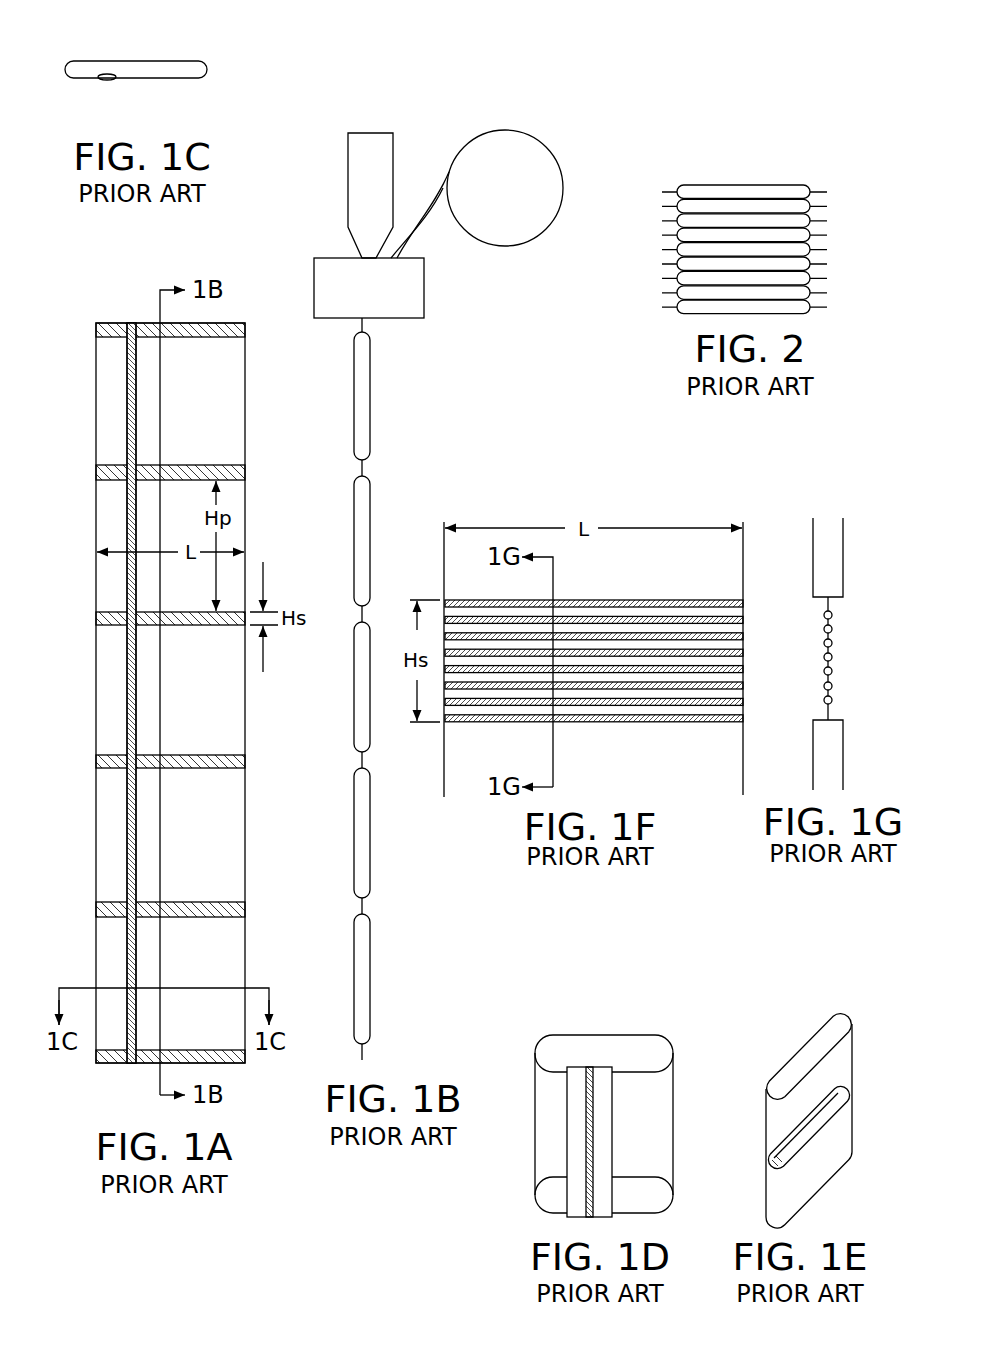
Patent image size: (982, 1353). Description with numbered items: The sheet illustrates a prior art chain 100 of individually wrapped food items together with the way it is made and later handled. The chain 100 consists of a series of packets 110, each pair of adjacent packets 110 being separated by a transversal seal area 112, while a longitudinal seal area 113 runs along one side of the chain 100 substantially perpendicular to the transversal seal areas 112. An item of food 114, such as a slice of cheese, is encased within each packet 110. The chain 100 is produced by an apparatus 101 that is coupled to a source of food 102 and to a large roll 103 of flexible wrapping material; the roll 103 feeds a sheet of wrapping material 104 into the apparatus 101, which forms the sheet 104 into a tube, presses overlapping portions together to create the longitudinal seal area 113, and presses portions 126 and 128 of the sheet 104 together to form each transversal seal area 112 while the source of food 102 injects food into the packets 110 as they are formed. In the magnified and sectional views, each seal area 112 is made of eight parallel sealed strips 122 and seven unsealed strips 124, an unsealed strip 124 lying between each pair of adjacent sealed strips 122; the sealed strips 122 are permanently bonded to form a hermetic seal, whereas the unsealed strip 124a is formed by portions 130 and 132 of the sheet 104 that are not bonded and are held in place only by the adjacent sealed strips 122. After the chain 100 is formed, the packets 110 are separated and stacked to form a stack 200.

In FIG. 1A, the chain 100 is at (108, 1080).
In FIG. 1B, the chain 100 is at (396, 1005).
In FIG. 1B, the apparatus 101 is at (425, 296).
In FIG. 1B, the source of food 102 is at (393, 152).
In FIG. 1B, the roll 103 is at (548, 147).
In FIG. 1B, the sheet of wrapping material 104 is at (418, 218).
In FIG. 1D, the sheet of wrapping material 104 is at (577, 1036).
In FIG. 1E, the sheet of wrapping material 104 is at (820, 1028).
In FIG. 1A, the packet 110 is at (96, 387).
In FIG. 1B, the packet 110 is at (372, 405).
In FIG. 1C, the packet 110 is at (165, 82).
In FIG. 1F, the packet 110 is at (444, 531).
In FIG. 1G, the packet 110 is at (843, 548).
In FIG. 2, the packet 110 is at (770, 183).
In FIG. 1A, the transversal seal area 112 is at (96, 331).
In FIG. 1B, the transversal seal area 112 is at (365, 325).
In FIG. 1F, the transversal seal area 112 is at (510, 596).
In FIG. 2, the transversal seal area 112 is at (672, 190).
In FIG. 1A, the longitudinal seal area 113 is at (127, 575).
In FIG. 1C, the longitudinal seal area 113 is at (108, 82).
In FIG. 1D, the longitudinal seal area 113 is at (595, 1125).
In FIG. 1B, the item of food 114 is at (366, 457).
In FIG. 1C, the item of food 114 is at (155, 68).
In FIG. 2, the item of food 114 is at (698, 190).
In FIG. 1F, the sealed strip 122 is at (592, 600).
In FIG. 1G, the sealed strip 122 is at (832, 660).
In FIG. 1F, the unsealed strip 124 is at (665, 610).
In FIG. 1G, the unsealed strip 124 is at (832, 628).
In FIG. 1G, the unsealed strip 124a is at (858, 688).
In FIG. 1E, the portion of sheet 126 is at (820, 1133).
In FIG. 1E, the portion of sheet 128 is at (783, 1133).
In FIG. 1G, the portion of sheet 130 is at (822, 701).
In FIG. 1G, the portion of sheet 132 is at (832, 704).
In FIG. 2, the stack 200 is at (838, 290).